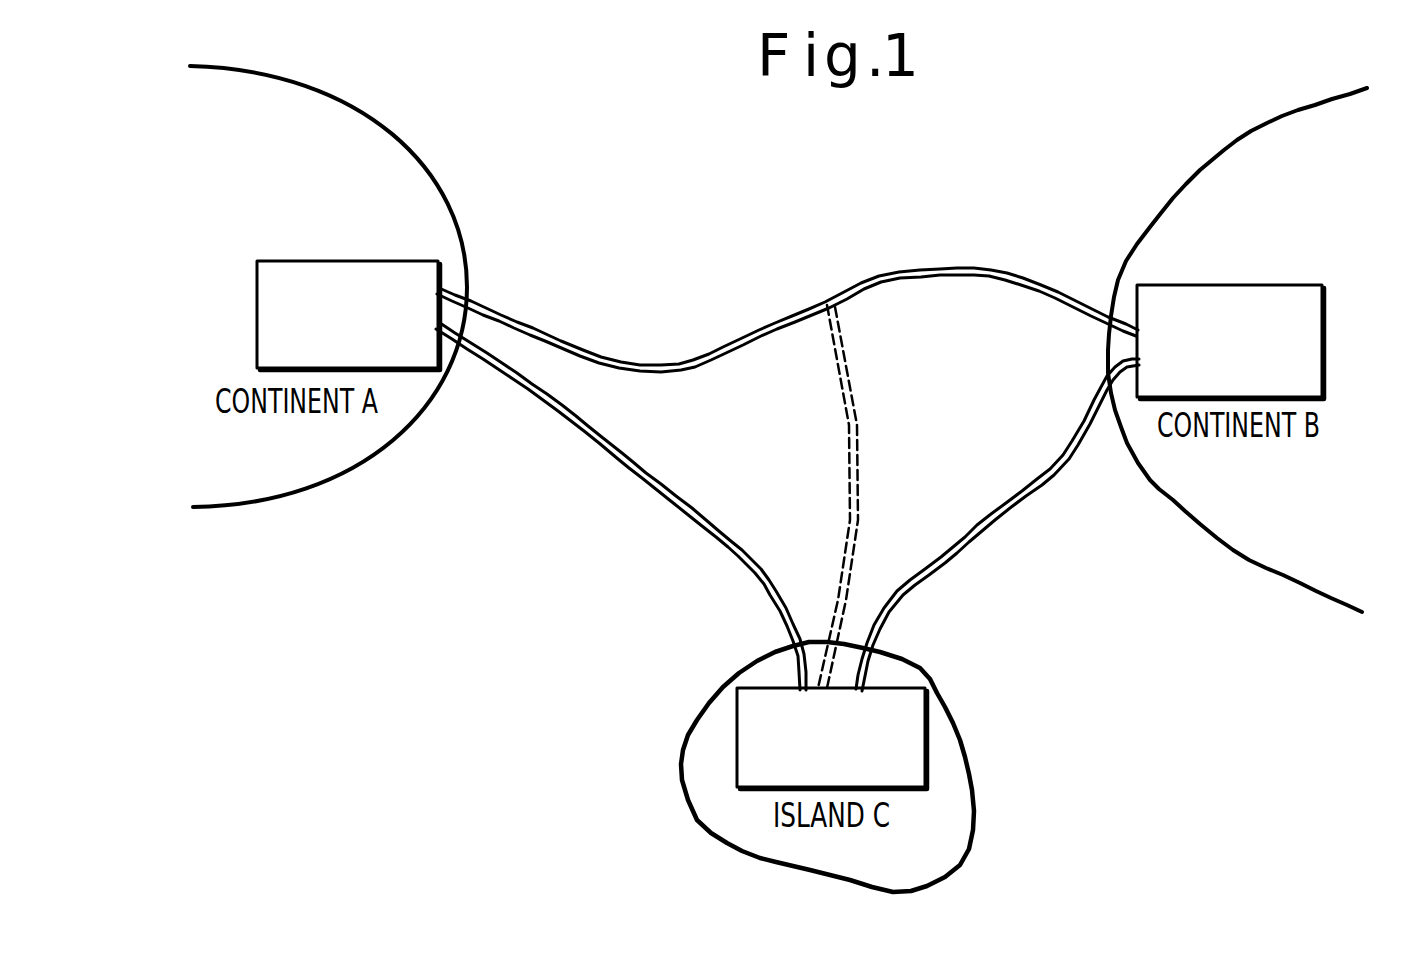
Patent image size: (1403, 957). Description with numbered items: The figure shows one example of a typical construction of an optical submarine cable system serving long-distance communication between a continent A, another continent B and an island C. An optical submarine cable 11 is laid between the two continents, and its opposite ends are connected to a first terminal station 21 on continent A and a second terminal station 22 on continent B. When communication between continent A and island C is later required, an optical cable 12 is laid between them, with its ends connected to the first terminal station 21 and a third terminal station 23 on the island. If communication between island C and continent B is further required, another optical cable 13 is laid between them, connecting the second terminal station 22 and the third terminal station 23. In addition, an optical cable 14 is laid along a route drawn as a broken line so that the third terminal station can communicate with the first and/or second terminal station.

The optical submarine cable 11 is at (973, 268).
The optical cable 12 is at (618, 461).
The optical cable 13 is at (1040, 490).
The optical cable 14 is at (858, 424).
The first terminal station 21 is at (437, 260).
The second terminal station 22 is at (1173, 285).
The third terminal station 23 is at (927, 706).